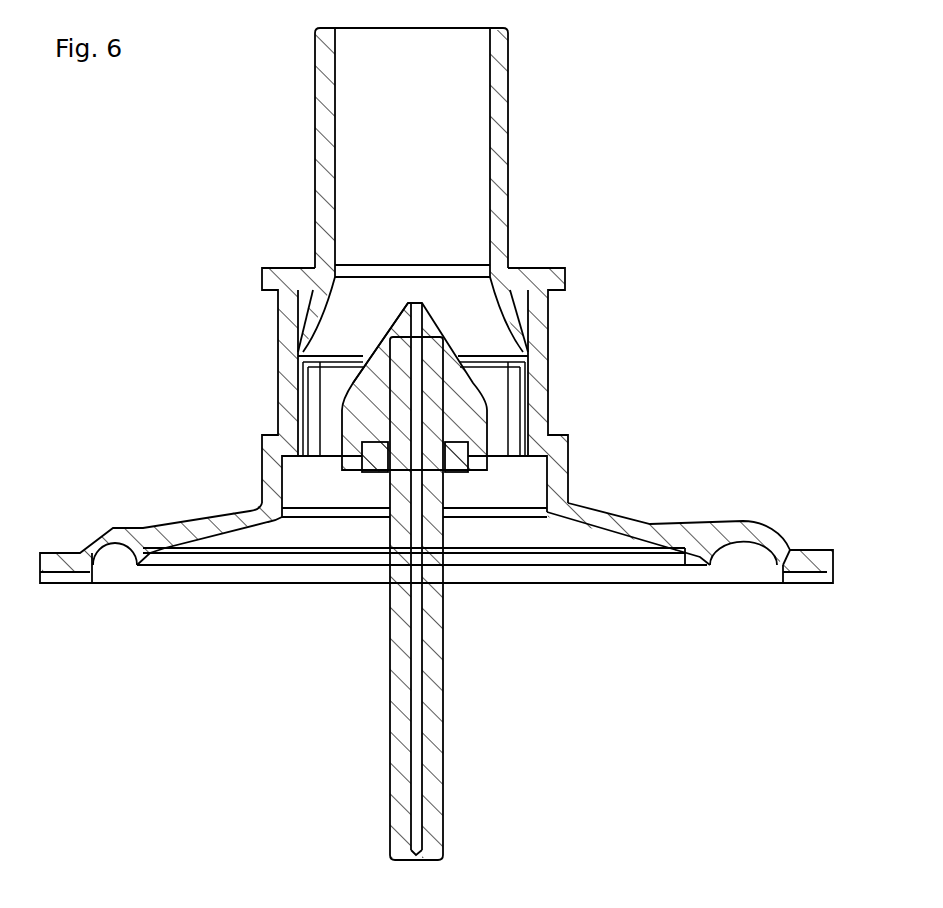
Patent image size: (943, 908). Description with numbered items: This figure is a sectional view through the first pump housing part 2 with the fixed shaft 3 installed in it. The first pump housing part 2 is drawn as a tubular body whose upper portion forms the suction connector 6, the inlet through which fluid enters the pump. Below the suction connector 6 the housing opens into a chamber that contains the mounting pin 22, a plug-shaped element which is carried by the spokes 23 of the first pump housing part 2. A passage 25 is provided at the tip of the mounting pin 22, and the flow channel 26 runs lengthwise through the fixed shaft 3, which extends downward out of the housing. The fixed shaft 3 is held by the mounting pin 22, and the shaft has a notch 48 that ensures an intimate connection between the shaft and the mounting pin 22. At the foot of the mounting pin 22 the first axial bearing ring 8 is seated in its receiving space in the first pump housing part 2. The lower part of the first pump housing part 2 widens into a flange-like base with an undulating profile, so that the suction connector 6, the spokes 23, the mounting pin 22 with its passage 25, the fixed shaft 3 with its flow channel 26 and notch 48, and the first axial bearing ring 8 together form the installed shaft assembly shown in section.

The suction connector 6 is at (507, 82).
The first pump housing part 2 is at (660, 527).
The fixed shaft 3 is at (435, 630).
The flow channel 26 is at (415, 697).
The passage 25 is at (415, 323).
The mounting pin 22 is at (467, 408).
The notch 48 is at (390, 397).
The spokes 23 is at (332, 415).
The first axial bearing ring 8 is at (377, 459).